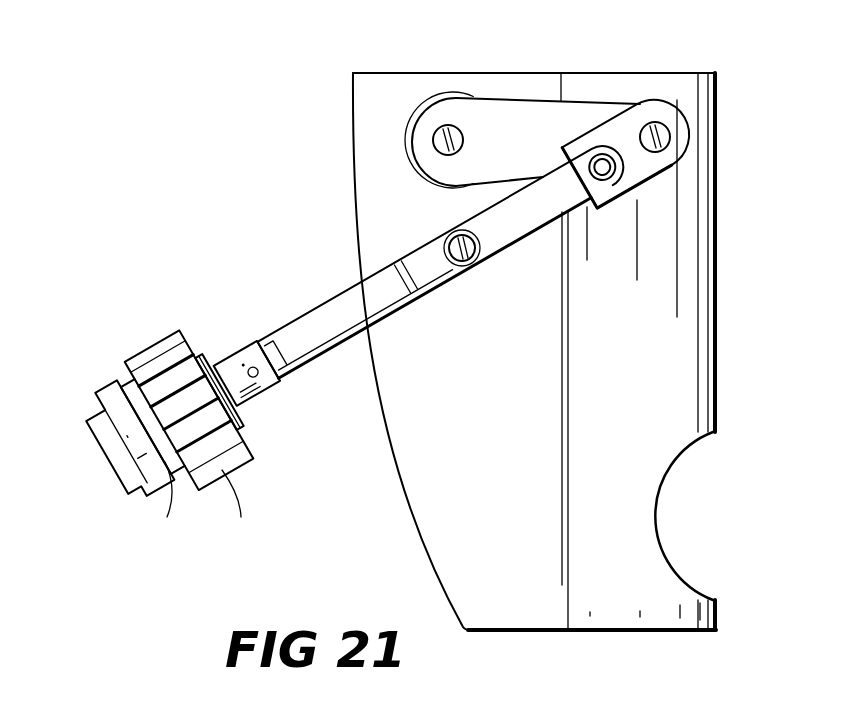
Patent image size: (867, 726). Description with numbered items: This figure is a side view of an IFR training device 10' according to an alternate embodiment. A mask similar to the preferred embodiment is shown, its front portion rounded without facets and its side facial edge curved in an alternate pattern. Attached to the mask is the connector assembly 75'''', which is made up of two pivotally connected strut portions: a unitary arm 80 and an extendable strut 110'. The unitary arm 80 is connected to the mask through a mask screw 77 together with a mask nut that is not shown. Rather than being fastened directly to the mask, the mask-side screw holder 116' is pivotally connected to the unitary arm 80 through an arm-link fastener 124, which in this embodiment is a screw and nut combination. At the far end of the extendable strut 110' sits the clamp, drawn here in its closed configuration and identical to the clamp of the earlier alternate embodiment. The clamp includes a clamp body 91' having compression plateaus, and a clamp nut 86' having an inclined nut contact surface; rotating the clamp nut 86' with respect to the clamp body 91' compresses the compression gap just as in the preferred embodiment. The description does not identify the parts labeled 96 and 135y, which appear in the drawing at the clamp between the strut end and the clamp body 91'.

The IFR training device 10' is at (414, 290).
The connector assembly 75'''' is at (520, 199).
The hinge block with washer 96 is at (197, 357).
The hub 135y is at (133, 402).
The clamp body 91' is at (132, 470).
The clamp nut 86' is at (191, 436).
The extendable strut 110' is at (444, 258).
The mask screw 77 is at (437, 133).
The unitary arm 80 is at (500, 125).
The arm-link fastener 124 is at (640, 137).
The mask-side screw holder 116' is at (676, 147).